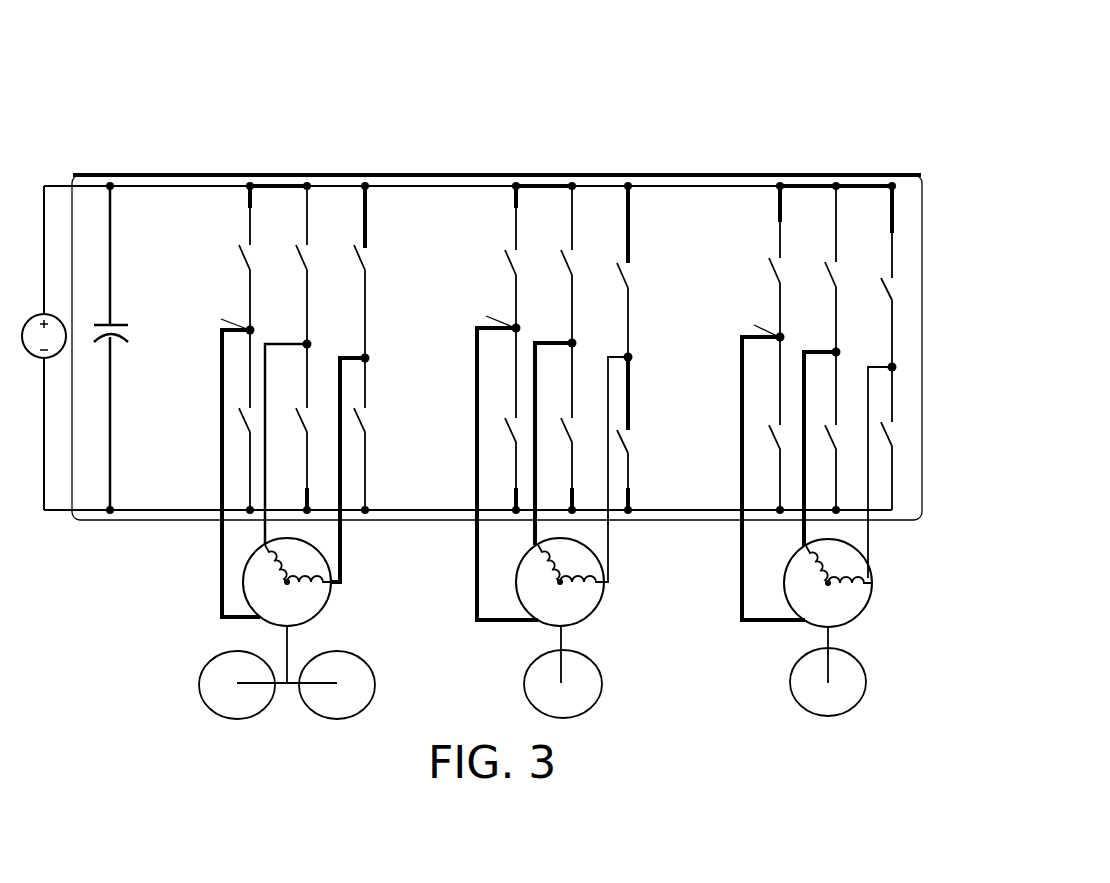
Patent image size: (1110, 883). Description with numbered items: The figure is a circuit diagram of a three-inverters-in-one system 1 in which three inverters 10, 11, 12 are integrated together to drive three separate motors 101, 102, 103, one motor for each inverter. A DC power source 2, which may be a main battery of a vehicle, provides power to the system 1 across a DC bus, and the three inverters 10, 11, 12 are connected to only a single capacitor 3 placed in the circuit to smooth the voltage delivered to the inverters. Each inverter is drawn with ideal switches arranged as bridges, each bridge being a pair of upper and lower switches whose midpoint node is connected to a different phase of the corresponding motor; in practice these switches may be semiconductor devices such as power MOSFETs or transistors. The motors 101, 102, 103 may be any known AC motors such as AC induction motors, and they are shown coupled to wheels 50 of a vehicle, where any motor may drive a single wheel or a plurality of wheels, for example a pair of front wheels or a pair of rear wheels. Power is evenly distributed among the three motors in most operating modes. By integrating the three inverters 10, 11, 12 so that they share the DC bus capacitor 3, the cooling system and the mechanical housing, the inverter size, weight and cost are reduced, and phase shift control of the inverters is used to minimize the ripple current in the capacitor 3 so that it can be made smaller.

The three-inverters-in-one system 1 is at (120, 105).
The DC power source 2 is at (36, 348).
The capacitor 3 is at (114, 348).
The inverter 10 is at (297, 348).
The inverter 11 is at (557, 348).
The inverter 12 is at (821, 348).
The wheels 50 is at (532, 672).
The motor 101 is at (305, 479).
The motor 102 is at (567, 480).
The motor 103 is at (833, 489).